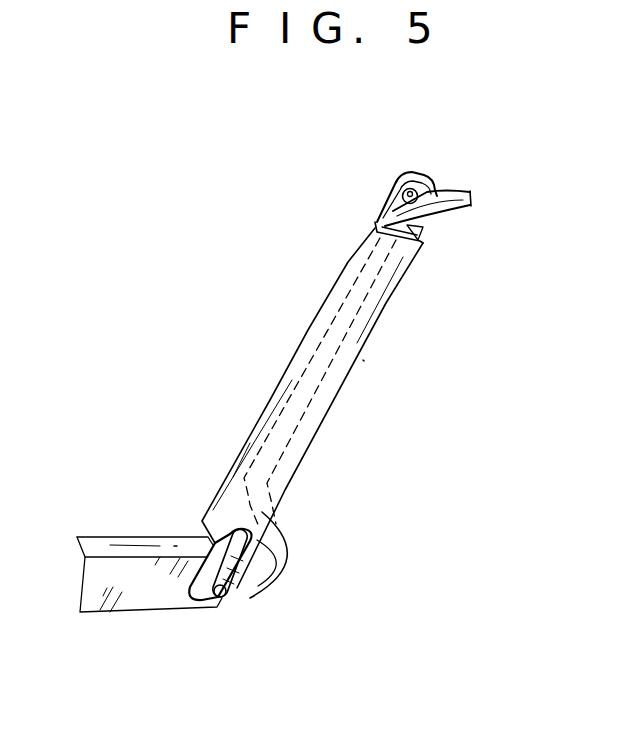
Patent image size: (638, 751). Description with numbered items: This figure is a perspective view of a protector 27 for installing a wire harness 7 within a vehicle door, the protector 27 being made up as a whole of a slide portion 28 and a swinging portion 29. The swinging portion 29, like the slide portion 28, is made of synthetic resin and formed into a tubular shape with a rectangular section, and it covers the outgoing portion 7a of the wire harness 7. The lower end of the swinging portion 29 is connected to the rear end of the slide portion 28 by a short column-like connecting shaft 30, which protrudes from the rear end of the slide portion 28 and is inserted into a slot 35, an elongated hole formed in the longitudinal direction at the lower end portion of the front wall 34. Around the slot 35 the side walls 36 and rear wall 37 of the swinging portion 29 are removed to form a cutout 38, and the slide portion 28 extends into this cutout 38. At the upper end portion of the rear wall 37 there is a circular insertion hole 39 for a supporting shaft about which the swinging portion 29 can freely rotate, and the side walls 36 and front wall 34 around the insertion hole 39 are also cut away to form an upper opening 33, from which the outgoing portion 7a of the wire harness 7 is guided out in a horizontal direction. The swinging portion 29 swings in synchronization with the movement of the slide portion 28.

The wire harness 7 is at (455, 192).
The outgoing portion 7a is at (318, 392).
The protector 27 is at (315, 392).
The slide portion 28 is at (143, 603).
The swinging portion 29 is at (367, 345).
The connecting shaft 30 is at (229, 598).
The upper opening 33 is at (415, 226).
The front wall 34 is at (288, 473).
The slot 35 is at (265, 577).
The side walls 36 is at (220, 507).
The rear wall 37 is at (380, 208).
The cutout 38 is at (210, 552).
The insertion hole 39 is at (421, 174).